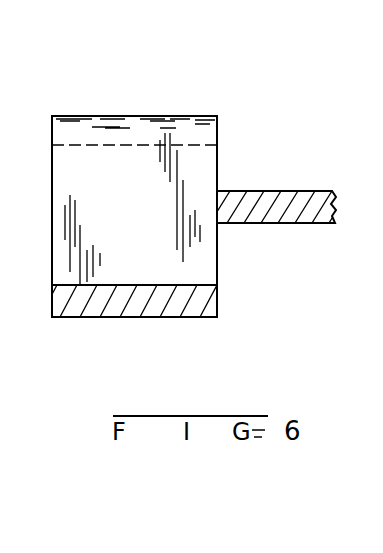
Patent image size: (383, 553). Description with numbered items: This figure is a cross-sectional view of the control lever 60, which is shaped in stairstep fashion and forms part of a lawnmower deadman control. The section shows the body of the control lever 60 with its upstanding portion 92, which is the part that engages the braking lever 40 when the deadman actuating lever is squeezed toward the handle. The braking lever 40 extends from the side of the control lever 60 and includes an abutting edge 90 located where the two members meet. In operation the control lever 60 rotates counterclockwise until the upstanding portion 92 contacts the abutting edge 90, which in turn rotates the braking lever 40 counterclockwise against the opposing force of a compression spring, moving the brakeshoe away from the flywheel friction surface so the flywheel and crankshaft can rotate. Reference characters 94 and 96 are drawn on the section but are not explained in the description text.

The control lever 60 is at (157, 86).
The upstanding portion 92 is at (140, 206).
The liquid level line 94 is at (80, 147).
The bottom wall 96 is at (168, 305).
The abutting edge 90 is at (214, 207).
The braking lever 40 is at (279, 215).